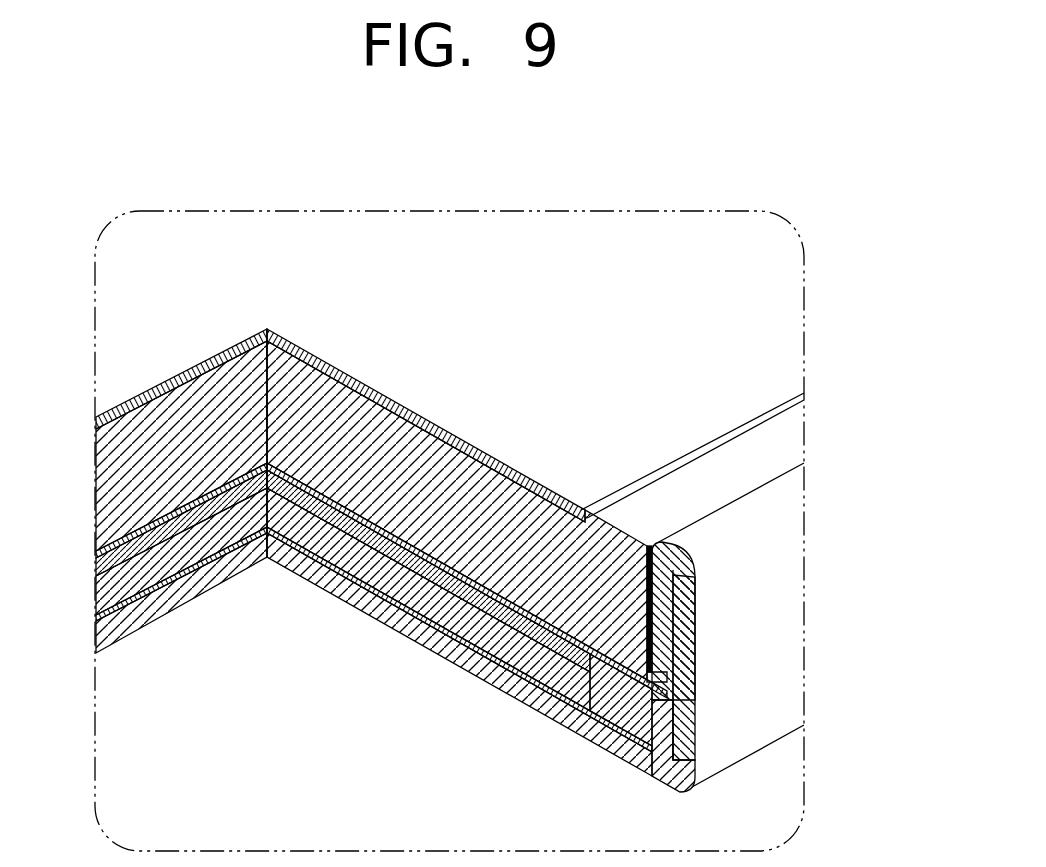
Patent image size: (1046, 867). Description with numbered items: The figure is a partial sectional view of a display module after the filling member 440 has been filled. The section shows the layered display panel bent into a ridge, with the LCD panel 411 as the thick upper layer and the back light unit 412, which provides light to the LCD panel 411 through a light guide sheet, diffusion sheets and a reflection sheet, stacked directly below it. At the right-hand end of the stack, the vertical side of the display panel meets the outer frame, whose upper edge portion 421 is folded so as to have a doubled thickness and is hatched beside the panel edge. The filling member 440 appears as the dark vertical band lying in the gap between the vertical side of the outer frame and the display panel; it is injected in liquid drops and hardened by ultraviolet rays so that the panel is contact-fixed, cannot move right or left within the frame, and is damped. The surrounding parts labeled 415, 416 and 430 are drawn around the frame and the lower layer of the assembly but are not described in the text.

The LCD panel 411 is at (112, 483).
The back light unit 412 is at (88, 555).
The housing / window 415 is at (783, 337).
The side wall portion 416 is at (672, 684).
The upper edge portion 421 is at (662, 630).
The back plate 430 is at (668, 732).
The filling member 440 is at (650, 596).